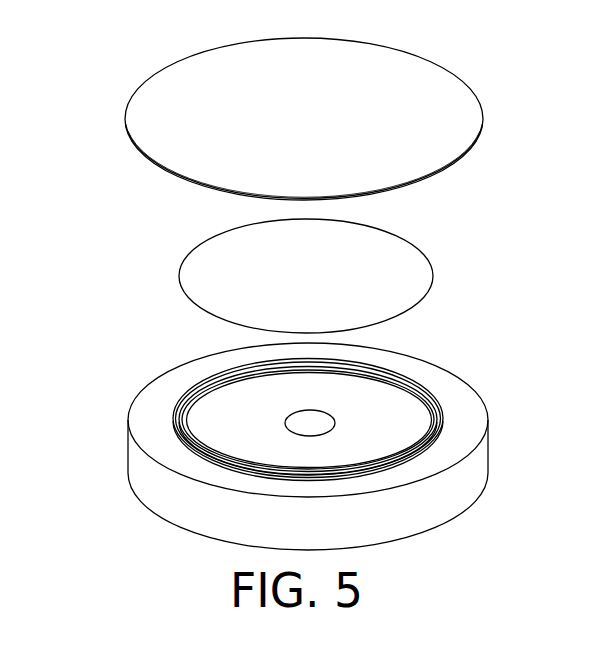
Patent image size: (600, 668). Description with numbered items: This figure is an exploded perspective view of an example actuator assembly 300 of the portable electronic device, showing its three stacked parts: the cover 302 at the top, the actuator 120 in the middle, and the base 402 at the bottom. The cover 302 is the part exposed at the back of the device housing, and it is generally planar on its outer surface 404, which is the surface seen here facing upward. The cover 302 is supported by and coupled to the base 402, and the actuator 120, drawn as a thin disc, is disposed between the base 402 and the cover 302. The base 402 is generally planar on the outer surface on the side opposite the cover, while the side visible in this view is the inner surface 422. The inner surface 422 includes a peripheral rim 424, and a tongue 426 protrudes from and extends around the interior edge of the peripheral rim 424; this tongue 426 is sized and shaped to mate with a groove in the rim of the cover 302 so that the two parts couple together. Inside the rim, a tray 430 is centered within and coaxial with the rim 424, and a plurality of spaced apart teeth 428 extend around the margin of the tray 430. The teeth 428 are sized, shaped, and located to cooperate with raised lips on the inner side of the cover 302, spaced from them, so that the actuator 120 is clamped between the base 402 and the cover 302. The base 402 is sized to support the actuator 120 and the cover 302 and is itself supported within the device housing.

The actuator assembly 300 is at (288, 276).
The cover 302 is at (323, 101).
The outer surface 404 is at (379, 53).
The actuator 120 is at (425, 258).
The base 402 is at (288, 425).
The inner surface 422 is at (465, 412).
The peripheral rim 424 is at (150, 428).
The tongue 426 is at (172, 418).
The teeth 428 is at (190, 393).
The tray 430 is at (363, 390).